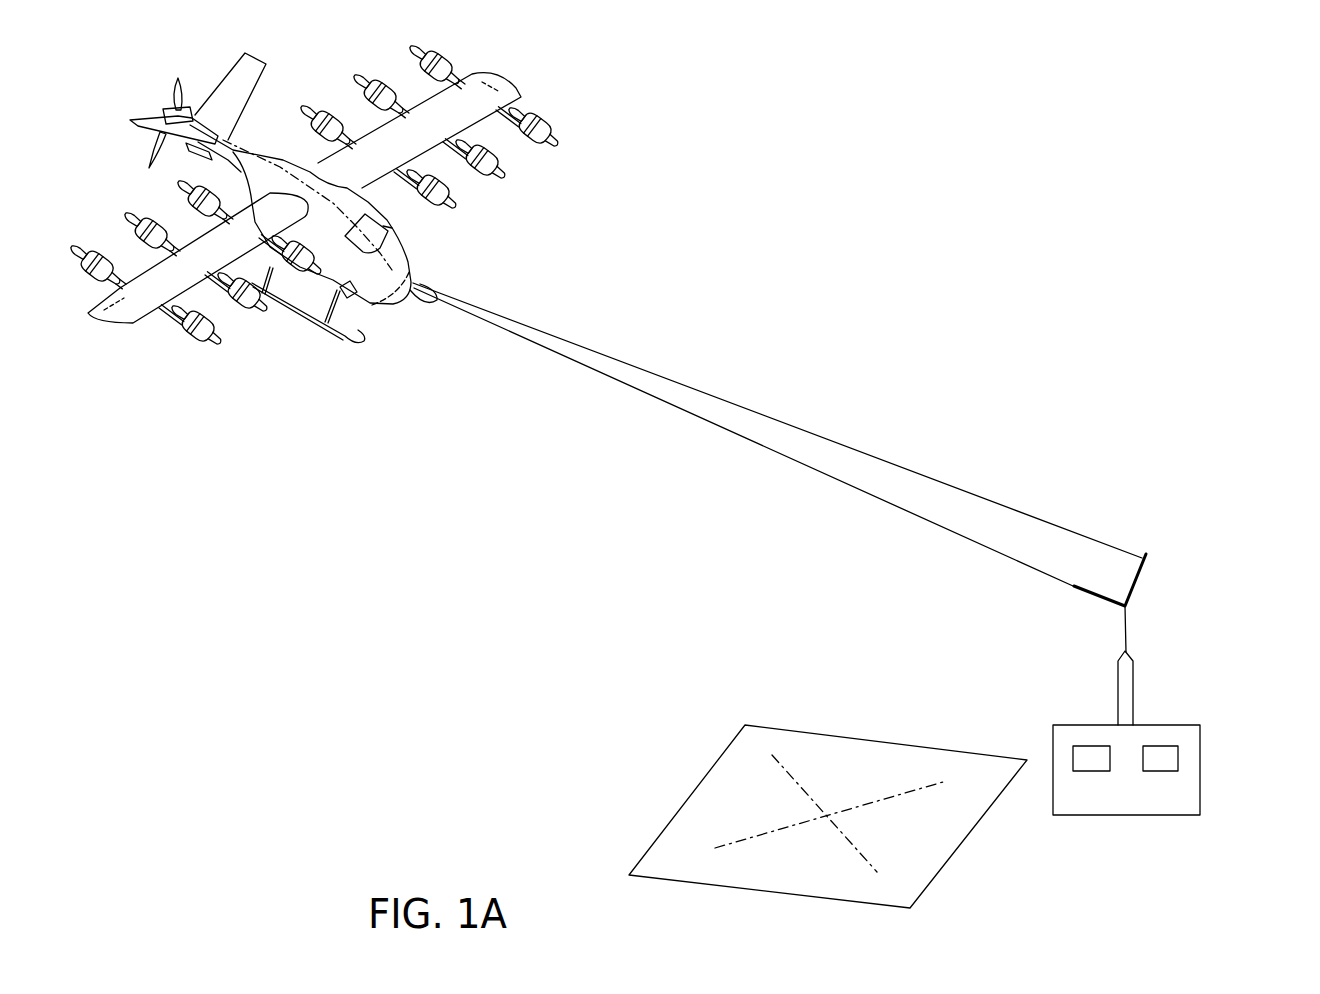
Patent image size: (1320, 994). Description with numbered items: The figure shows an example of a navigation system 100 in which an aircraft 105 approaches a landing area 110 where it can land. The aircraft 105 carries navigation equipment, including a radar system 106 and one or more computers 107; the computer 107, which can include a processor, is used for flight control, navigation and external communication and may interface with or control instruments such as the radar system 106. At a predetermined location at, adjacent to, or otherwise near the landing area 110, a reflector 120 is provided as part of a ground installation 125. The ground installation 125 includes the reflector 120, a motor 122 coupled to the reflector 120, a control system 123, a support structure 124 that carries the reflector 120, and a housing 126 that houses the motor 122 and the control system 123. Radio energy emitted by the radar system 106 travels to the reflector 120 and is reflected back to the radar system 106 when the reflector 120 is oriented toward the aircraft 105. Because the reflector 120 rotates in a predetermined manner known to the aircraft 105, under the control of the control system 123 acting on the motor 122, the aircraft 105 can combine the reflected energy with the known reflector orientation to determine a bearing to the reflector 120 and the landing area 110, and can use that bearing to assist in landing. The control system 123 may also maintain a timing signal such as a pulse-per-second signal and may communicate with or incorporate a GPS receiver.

The navigation system 100 is at (1068, 126).
The aircraft 105 is at (146, 97).
The radar system 106 is at (335, 338).
The computer 107 is at (372, 223).
The landing area 110 is at (636, 801).
The reflector 120 is at (1140, 583).
The motor 122 is at (1088, 762).
The control system 123 is at (1165, 762).
The support structure 124 is at (1134, 694).
The ground installation 125 is at (1226, 729).
The housing 126 is at (1158, 824).